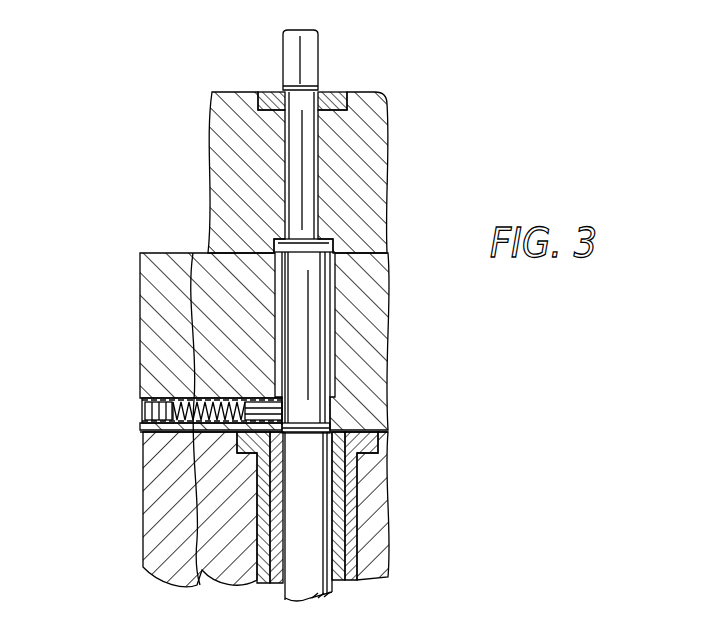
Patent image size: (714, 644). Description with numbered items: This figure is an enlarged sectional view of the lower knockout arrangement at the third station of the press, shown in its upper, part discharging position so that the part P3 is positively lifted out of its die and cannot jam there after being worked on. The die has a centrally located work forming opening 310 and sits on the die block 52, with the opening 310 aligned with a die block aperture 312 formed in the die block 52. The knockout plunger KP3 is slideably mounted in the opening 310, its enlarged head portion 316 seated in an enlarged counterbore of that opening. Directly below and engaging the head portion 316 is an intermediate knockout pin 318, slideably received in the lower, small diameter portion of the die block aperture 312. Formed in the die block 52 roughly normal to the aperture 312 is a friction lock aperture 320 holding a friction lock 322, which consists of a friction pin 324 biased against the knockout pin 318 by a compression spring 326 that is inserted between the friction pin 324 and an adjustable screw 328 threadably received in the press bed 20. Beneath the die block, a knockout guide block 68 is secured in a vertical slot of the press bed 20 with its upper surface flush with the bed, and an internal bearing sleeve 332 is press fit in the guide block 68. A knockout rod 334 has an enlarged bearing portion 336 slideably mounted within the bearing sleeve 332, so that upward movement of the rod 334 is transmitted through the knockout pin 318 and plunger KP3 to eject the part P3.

The part P3 is at (312, 52).
The knockout plunger KP3 is at (305, 133).
The work forming opening 310 is at (312, 170).
The enlarged head portion 316 is at (335, 244).
The die block aperture 312 is at (322, 290).
The intermediate knockout pin 318 is at (312, 373).
The die block 52 is at (373, 338).
The friction lock aperture 320 is at (235, 400).
The friction lock 322 is at (132, 424).
The friction pin 324 is at (247, 400).
The compression spring 326 is at (165, 447).
The adjustable screw 328 is at (142, 408).
The knockout guide block 68 is at (388, 440).
The press bed 20 is at (167, 530).
The bearing sleeve 332 is at (333, 475).
The knockout rod 334 is at (317, 523).
The enlarged bearing portion 336 is at (325, 547).